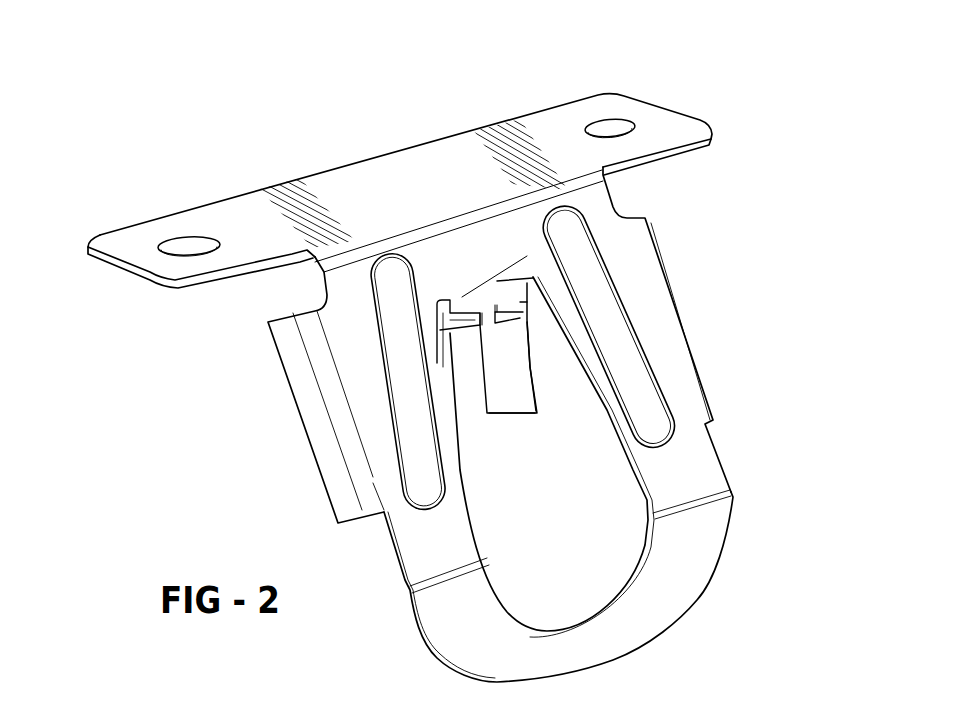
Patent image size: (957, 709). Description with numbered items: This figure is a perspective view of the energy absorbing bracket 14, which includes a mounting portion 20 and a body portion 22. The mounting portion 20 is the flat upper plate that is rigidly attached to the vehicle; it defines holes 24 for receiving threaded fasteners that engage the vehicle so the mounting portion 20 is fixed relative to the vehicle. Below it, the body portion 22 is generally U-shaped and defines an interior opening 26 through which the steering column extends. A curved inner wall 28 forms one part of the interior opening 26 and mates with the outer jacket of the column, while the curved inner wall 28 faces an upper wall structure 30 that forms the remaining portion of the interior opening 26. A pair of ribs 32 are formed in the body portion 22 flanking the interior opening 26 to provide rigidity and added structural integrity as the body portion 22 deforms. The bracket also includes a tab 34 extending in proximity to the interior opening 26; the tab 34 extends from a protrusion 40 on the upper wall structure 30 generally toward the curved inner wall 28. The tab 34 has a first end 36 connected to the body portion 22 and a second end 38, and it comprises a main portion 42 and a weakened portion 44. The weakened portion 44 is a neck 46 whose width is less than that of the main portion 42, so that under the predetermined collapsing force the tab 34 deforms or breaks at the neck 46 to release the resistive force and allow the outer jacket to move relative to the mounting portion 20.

The energy absorbing bracket 14 is at (688, 104).
The mounting portion 20 is at (243, 207).
The body portion 22 is at (443, 641).
The holes 24 is at (180, 237).
The interior opening 26 is at (620, 487).
The curved inner wall 28 is at (577, 622).
The upper wall structure 30 is at (522, 263).
The rib 32 is at (397, 323).
The tab 34 is at (487, 414).
The first end 36 is at (488, 306).
The second end 38 is at (513, 413).
The protrusion 40 is at (462, 304).
The main portion 42 is at (520, 366).
The weakened portion 44 is at (482, 328).
The neck 46 is at (487, 315).